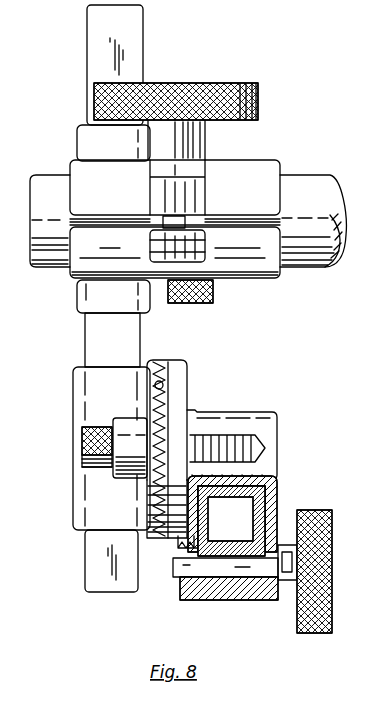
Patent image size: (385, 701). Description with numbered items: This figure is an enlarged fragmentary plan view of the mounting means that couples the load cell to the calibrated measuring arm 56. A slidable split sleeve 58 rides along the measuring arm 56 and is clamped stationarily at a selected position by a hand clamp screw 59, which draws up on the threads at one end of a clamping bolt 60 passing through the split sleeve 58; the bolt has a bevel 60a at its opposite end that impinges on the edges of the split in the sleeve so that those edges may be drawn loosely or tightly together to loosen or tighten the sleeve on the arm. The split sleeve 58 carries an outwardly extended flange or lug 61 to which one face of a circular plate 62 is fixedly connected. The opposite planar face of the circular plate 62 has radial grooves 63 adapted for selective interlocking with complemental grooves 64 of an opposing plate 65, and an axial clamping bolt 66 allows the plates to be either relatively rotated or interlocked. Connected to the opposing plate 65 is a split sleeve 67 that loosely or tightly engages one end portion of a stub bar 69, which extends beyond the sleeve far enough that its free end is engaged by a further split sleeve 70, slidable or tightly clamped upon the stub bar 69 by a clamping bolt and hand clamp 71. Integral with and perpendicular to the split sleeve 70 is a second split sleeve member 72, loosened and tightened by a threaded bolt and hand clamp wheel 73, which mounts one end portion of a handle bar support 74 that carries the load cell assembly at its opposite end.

The calibrated measuring arm 56 is at (250, 515).
The split sleeve 58 is at (277, 500).
The hand clamp screw 59 is at (325, 540).
The clamping bolt 60 is at (218, 572).
The bevel 60a is at (198, 550).
The flange or lug 61 is at (226, 425).
The circular plate 62 is at (180, 372).
The radial grooves 63 is at (168, 365).
The complemental grooves 64 is at (167, 388).
The opposing plate 65 is at (156, 364).
The axial clamping bolt 66 is at (82, 442).
The split sleeve 67 is at (78, 497).
The stub bar 69 is at (132, 30).
The split sleeve 70 is at (88, 138).
The clamping bolt and hand clamp 71 is at (215, 293).
The second split sleeve member 72 is at (92, 257).
The threaded bolt and hand clamp wheel 73 is at (258, 98).
The handle bar support 74 is at (302, 183).